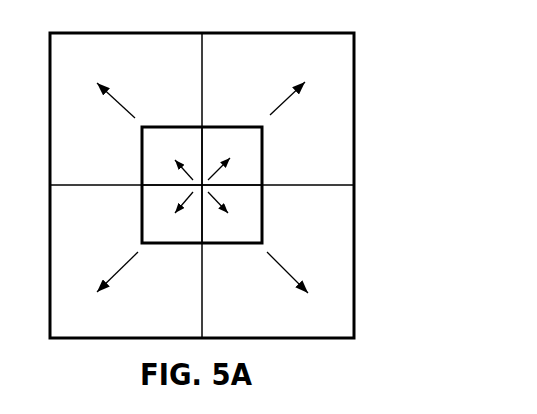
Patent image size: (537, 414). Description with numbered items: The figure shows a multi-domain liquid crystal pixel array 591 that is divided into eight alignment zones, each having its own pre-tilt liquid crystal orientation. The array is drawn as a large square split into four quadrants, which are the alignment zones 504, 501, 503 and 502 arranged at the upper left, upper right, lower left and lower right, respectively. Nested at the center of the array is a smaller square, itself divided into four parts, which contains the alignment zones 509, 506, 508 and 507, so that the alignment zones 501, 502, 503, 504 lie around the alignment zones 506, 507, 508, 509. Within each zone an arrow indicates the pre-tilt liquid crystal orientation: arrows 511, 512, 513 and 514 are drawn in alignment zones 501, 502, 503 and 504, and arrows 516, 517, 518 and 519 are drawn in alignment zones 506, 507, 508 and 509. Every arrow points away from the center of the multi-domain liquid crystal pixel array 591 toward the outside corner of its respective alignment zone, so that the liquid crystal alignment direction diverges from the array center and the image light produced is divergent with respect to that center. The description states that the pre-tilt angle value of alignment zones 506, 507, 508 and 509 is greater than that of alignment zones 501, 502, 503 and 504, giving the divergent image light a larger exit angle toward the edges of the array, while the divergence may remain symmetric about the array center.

The alignment zone 501 is at (312, 63).
The alignment zone 502 is at (312, 326).
The alignment zone 503 is at (162, 326).
The alignment zone 504 is at (162, 63).
The alignment zone 506 is at (229, 146).
The alignment zone 507 is at (229, 240).
The alignment zone 508 is at (198, 240).
The alignment zone 509 is at (198, 146).
The arrow 511 is at (283, 101).
The arrow 512 is at (283, 266).
The arrow 513 is at (118, 270).
The arrow 514 is at (118, 99).
The arrow 516 is at (214, 176).
The arrow 517 is at (219, 196).
The arrow 518 is at (189, 197).
The arrow 519 is at (189, 178).
The multi-domain liquid crystal pixel array 591 is at (364, 147).